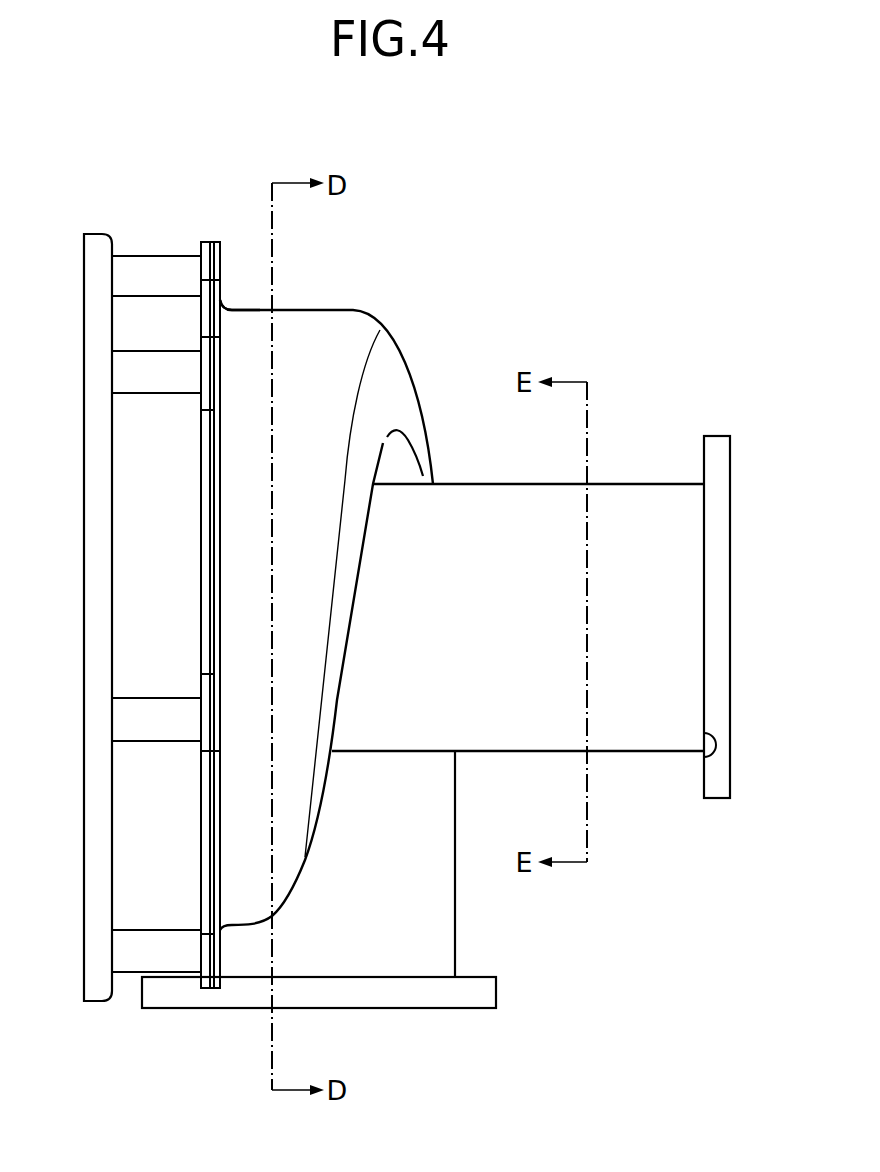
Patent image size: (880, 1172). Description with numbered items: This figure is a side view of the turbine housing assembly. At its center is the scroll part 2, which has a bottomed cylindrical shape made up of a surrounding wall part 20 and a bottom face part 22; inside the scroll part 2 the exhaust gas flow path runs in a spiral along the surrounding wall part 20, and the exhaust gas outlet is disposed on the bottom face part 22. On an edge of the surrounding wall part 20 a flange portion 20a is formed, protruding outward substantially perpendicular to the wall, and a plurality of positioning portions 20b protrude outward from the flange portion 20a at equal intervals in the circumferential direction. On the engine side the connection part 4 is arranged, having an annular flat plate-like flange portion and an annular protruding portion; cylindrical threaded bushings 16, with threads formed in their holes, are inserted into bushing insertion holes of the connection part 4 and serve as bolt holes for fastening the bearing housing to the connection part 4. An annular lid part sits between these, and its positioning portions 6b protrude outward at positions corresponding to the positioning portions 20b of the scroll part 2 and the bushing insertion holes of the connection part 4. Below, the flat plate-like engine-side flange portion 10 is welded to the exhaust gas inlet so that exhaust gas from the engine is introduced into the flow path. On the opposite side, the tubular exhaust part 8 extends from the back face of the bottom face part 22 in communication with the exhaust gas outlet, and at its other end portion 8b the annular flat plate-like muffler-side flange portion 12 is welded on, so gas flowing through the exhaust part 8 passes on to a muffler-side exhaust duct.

The scroll part 2 is at (462, 557).
The connection part 4 is at (96, 228).
The positioning portions 6b is at (201, 242).
The exhaust part 8 is at (637, 483).
The other end portion 8b is at (700, 757).
The engine-side flange portion 10 is at (465, 995).
The muffler-side flange portion 12 is at (718, 436).
The threaded bushing 16 is at (147, 268).
The surrounding wall part 20 is at (326, 547).
The flange portion 20a is at (222, 298).
The positioning portions 20b is at (221, 242).
The bottom face part 22 is at (395, 390).